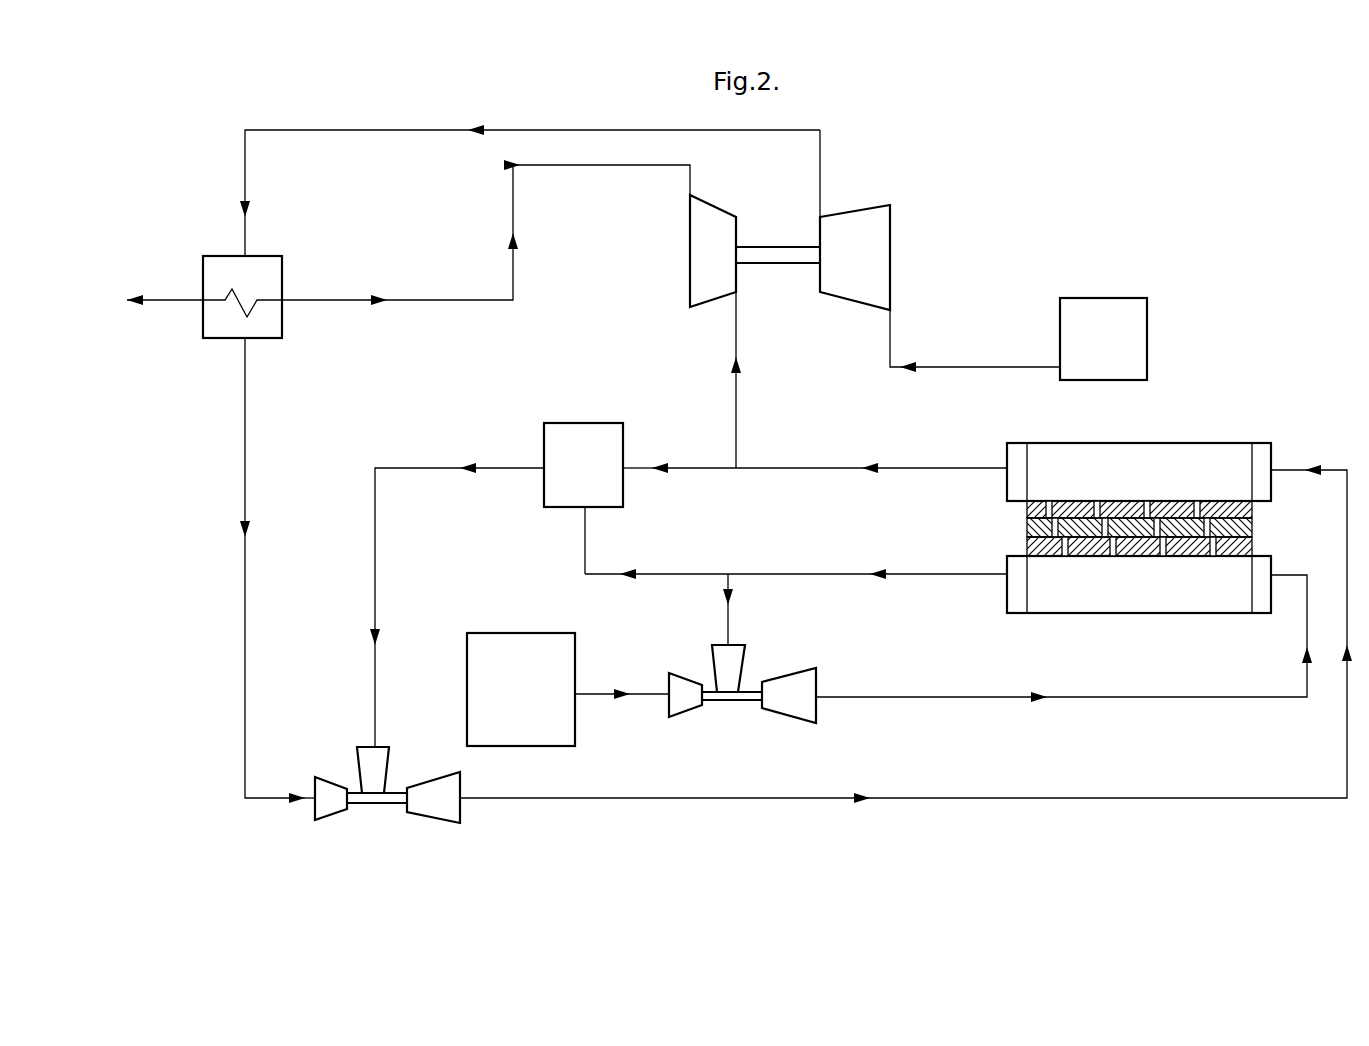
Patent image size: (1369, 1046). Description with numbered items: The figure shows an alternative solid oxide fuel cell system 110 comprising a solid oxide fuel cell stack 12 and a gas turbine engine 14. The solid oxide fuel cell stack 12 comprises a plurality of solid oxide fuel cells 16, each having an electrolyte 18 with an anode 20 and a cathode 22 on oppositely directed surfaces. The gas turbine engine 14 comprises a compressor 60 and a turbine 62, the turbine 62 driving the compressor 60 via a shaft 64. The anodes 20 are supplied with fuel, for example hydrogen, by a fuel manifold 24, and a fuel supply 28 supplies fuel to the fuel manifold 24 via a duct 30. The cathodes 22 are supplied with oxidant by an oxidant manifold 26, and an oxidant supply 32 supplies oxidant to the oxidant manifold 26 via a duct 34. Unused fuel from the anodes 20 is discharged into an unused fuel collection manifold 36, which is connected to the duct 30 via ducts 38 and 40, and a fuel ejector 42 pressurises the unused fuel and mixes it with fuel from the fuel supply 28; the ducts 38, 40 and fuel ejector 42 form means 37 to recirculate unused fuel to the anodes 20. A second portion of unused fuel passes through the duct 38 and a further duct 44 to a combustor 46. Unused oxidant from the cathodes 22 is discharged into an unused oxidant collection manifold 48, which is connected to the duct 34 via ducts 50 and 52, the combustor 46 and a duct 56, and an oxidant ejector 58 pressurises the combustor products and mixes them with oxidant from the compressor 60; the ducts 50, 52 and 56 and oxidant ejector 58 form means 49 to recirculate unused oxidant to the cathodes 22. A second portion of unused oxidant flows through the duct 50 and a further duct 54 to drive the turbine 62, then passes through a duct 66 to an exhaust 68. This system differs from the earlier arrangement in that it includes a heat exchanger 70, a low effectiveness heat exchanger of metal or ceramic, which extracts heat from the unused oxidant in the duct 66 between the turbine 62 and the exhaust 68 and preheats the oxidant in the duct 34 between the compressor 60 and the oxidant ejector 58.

The solid oxide fuel cell system 110 is at (1123, 272).
The solid oxide fuel cell stack 12 is at (1213, 440).
The gas turbine engine 14 is at (810, 307).
The solid oxide fuel cells 16 is at (1215, 500).
The electrolyte 18 is at (1030, 527).
The anode 20 is at (1027, 545).
The cathode 22 is at (1030, 507).
The fuel manifold 24 is at (1262, 605).
The oxidant manifold 26 is at (1285, 455).
The fuel supply 28 is at (520, 632).
The duct 30 is at (620, 697).
The oxidant supply 32 is at (1133, 340).
The duct 34 is at (425, 132).
The unused fuel collection manifold 36 is at (1017, 588).
The means to supply unused fuel 37 is at (888, 637).
The duct 38 is at (848, 575).
The duct 40 is at (730, 612).
The fuel ejector 42 is at (728, 703).
The duct 44 is at (640, 572).
The combustor 46 is at (552, 423).
The unused oxidant collection manifold 48 is at (1017, 452).
The means to supply unused oxidant 49 is at (490, 437).
The duct 50 is at (835, 470).
The duct 52 is at (690, 470).
The duct 54 is at (737, 410).
The duct 56 is at (375, 573).
The oxidant ejector 58 is at (378, 803).
The compressor 60 is at (870, 205).
The turbine 62 is at (700, 305).
The shaft 64 is at (778, 250).
The duct 66 is at (632, 166).
The exhaust 68 is at (135, 291).
The heat exchanger 70 is at (282, 275).